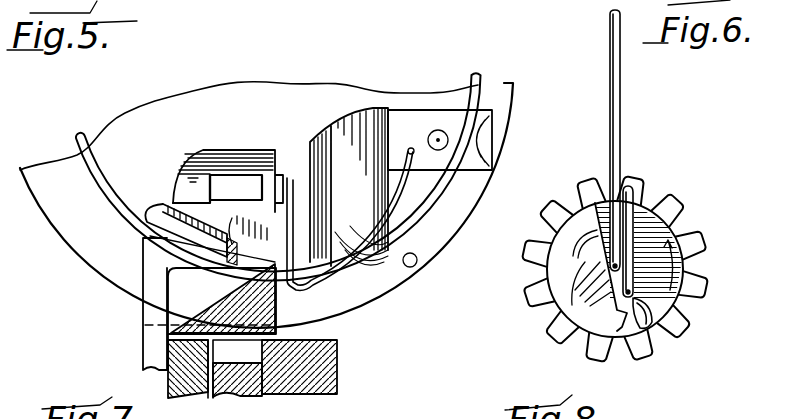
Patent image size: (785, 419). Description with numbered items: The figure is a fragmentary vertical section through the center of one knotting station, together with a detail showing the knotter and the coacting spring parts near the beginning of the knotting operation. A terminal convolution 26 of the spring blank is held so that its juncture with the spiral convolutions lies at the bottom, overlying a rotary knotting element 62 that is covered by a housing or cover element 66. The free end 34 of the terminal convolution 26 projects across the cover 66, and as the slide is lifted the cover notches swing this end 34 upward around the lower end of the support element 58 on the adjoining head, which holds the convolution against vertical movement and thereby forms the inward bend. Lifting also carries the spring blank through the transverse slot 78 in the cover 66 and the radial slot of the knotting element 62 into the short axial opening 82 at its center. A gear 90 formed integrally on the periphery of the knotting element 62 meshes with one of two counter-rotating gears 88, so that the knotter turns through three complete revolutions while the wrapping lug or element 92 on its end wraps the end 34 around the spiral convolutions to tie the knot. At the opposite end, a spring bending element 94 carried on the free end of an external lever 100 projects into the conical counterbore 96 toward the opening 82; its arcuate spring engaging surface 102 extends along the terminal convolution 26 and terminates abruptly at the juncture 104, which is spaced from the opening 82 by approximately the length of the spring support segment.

In FIG. 5, the terminal convolution 26 is at (80, 139).
In FIG. 5, the free end of terminal convolution 34 is at (290, 177).
In FIG. 5, the support element 58 is at (360, 252).
In FIG. 5, the rotary knotting element 62 is at (275, 325).
In FIG. 6, the rotary knotting element 62 is at (663, 333).
In FIG. 5, the housing or cover element 66 is at (178, 172).
In FIG. 5, the transverse slot 78 is at (203, 165).
In FIG. 5, the axial opening 82 is at (240, 288).
In FIG. 5, the counter-rotating gear 88 is at (246, 382).
In FIG. 5, the gear 90 is at (230, 185).
In FIG. 6, the wrapping lug or element 92 is at (568, 296).
In FIG. 5, the spring bending element 94 is at (170, 277).
In FIG. 5, the conical counterbore 96 is at (167, 327).
In FIG. 5, the external lever 100 is at (143, 307).
In FIG. 5, the arcuate spring engaging surface 102 is at (147, 238).
In FIG. 5, the juncture 104 is at (207, 217).